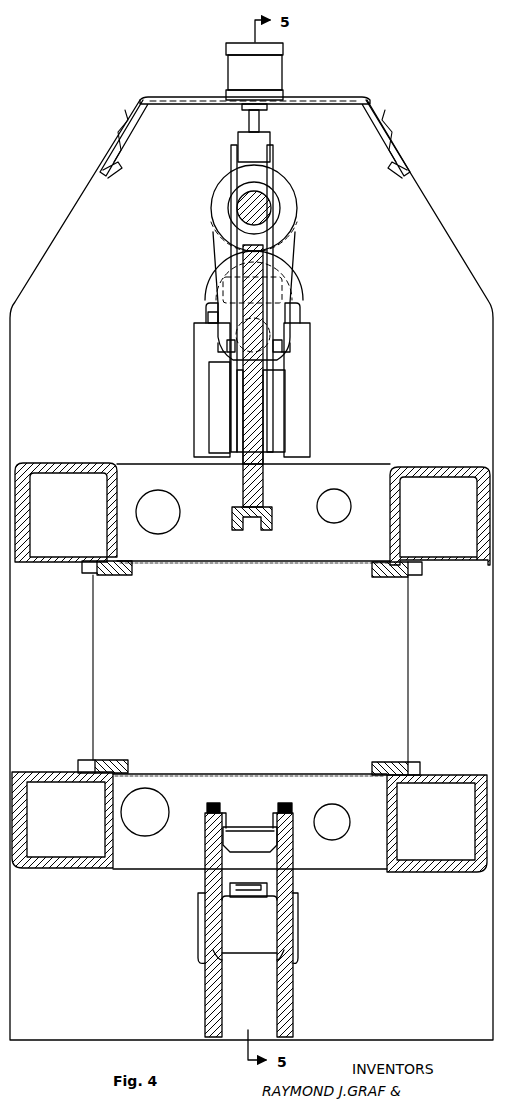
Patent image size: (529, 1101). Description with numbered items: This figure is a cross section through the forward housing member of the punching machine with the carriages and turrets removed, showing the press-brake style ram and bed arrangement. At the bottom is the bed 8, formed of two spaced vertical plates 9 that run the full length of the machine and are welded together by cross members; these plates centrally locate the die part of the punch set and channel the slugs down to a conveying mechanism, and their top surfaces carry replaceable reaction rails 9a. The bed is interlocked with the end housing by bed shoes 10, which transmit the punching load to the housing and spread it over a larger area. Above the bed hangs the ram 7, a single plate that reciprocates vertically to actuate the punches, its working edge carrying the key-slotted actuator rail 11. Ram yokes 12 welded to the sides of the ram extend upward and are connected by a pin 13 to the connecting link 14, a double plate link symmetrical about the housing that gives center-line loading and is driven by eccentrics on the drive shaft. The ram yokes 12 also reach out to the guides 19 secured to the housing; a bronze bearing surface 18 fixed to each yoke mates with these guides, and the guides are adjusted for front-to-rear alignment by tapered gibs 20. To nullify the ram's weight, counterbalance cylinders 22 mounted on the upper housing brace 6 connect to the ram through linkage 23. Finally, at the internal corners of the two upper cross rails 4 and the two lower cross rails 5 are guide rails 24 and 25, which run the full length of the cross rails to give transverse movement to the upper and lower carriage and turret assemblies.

The upper cross rails 4 is at (447, 452).
The lower cross rails 5 is at (457, 882).
The upper housing brace 6 is at (386, 133).
The ram 7 is at (264, 488).
The bed 8 is at (296, 989).
The plates 9 is at (273, 950).
The reaction rails 9a is at (280, 807).
The bed shoes 10 is at (297, 953).
The actuator rail 11 is at (273, 518).
The ram yokes 12 is at (242, 462).
The pin 13 is at (207, 320).
The connecting link 14 is at (215, 252).
The bearing surface 18 is at (323, 398).
The guides 19 is at (338, 340).
The tapered gibs 20 is at (323, 303).
The counterbalance cylinders 22 is at (284, 74).
The linkage 23 is at (290, 160).
The upper guide rails 24 is at (347, 585).
The lower guide rails 25 is at (371, 768).